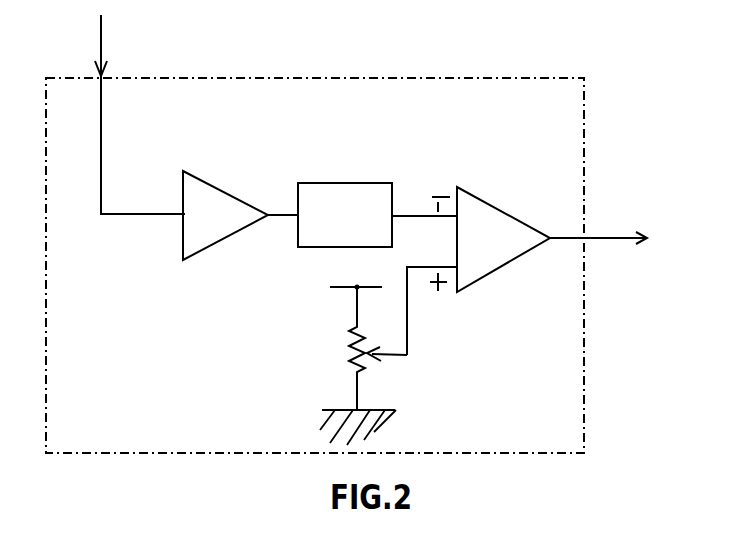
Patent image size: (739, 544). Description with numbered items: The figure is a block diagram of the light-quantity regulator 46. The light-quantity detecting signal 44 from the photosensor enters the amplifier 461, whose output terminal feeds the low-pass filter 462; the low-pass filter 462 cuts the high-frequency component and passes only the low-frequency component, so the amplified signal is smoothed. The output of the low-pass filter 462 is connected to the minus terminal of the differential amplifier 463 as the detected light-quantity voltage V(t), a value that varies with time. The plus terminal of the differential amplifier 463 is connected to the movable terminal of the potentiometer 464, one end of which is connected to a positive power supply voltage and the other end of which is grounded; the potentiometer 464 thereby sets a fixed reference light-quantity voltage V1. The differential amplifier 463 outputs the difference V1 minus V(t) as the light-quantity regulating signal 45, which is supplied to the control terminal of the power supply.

The light-quantity detecting signal 44 is at (102, 42).
The light-quantity regulating signal 45 is at (627, 234).
The light-quantity regulator 46 is at (498, 79).
The amplifier 461 is at (218, 188).
The low-pass filter 462 is at (348, 182).
The differential amplifier 463 is at (514, 215).
The potentiometer 464 is at (352, 340).